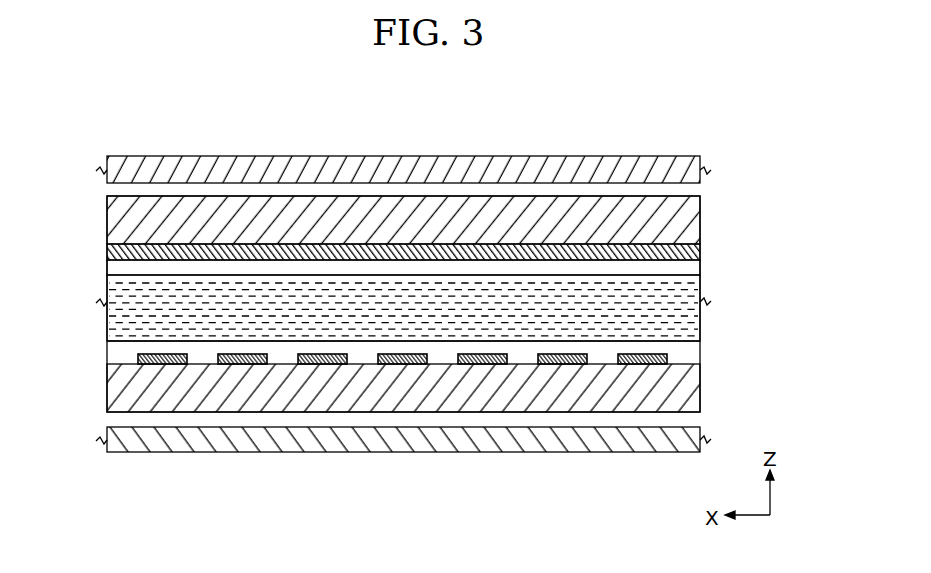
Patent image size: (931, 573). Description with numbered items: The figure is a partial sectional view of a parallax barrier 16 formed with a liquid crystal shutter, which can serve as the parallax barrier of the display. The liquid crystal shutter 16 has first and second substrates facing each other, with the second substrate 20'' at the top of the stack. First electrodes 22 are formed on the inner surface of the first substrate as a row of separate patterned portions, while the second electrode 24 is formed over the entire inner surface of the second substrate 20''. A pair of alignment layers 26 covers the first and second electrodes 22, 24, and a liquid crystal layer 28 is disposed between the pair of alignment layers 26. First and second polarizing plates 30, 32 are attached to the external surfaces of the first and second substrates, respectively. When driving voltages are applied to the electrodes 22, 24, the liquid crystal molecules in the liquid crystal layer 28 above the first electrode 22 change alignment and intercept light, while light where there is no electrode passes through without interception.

The parallax barrier 16 is at (748, 313).
The second substrate 20'' is at (430, 220).
The first electrode 22 is at (235, 365).
The second electrode 24 is at (217, 250).
The alignment layers 26 is at (110, 272).
The liquid crystal layer 28 is at (391, 322).
The first polarizing plate 30 is at (515, 452).
The second polarizing plate 32 is at (528, 156).